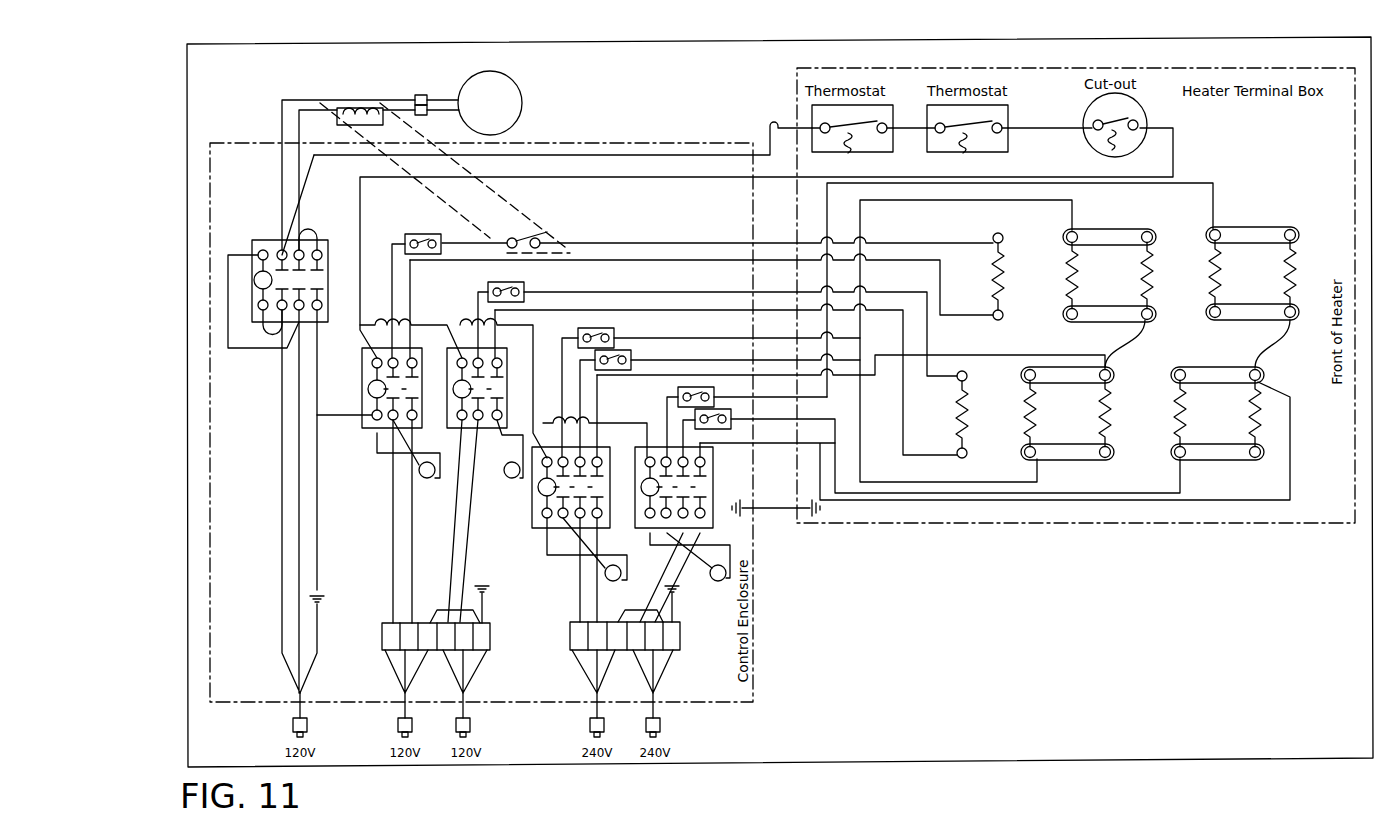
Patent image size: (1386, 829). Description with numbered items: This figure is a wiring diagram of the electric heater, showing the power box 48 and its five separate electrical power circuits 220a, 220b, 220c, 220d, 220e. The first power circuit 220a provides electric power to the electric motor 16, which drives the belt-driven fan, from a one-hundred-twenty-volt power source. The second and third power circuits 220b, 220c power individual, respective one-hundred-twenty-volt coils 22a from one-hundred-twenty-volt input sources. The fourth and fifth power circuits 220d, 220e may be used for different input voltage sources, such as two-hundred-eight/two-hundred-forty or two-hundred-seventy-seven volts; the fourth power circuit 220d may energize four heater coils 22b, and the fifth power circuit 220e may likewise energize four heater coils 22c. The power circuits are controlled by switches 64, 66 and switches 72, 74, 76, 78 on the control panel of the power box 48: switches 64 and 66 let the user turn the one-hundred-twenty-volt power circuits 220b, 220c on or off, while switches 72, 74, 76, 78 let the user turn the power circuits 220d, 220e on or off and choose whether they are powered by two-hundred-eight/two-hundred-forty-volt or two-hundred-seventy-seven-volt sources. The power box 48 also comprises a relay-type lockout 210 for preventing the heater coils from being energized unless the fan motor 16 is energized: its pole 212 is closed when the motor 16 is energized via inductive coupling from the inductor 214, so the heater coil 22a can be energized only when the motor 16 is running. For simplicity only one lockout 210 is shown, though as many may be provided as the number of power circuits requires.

The electric motor 16 is at (522, 82).
The inductor 214 is at (366, 108).
The relay-type lockout 210 is at (486, 187).
The pole 212 is at (540, 240).
The switch 64 is at (423, 233).
The switch 66 is at (524, 285).
The switch 72 is at (598, 327).
The switch 74 is at (603, 370).
The switch 76 is at (688, 386).
The switch 78 is at (715, 431).
The first power circuit 220a is at (263, 238).
The second power circuit 220b is at (362, 430).
The third power circuit 220c is at (462, 462).
The fourth power circuit 220d is at (541, 528).
The fifth power circuit 220e is at (668, 538).
The 120V heater coils 22a is at (978, 555).
The heater coils 22b is at (1120, 256).
The heater coils 22c is at (1295, 292).
The power box 48 is at (962, 762).